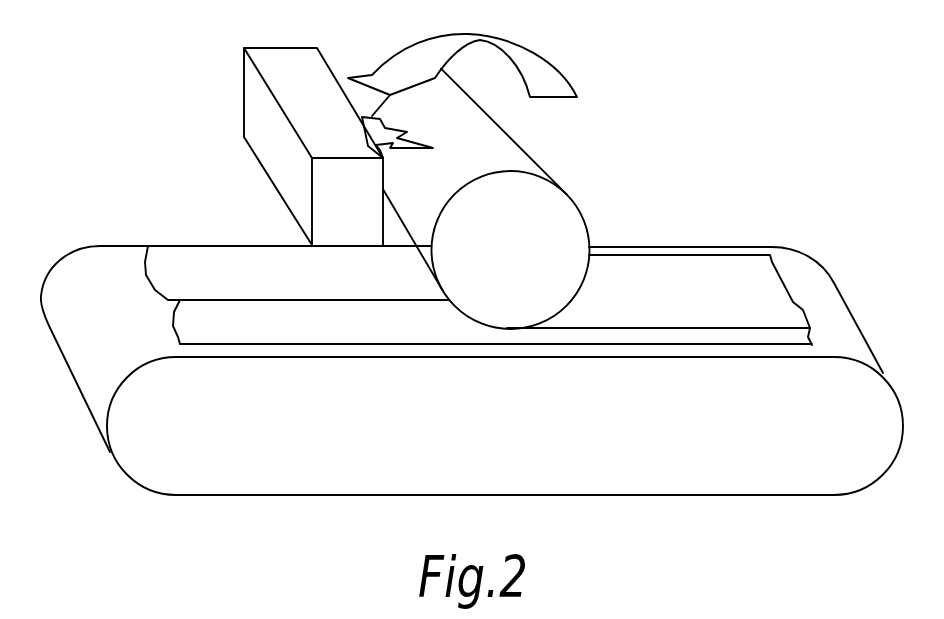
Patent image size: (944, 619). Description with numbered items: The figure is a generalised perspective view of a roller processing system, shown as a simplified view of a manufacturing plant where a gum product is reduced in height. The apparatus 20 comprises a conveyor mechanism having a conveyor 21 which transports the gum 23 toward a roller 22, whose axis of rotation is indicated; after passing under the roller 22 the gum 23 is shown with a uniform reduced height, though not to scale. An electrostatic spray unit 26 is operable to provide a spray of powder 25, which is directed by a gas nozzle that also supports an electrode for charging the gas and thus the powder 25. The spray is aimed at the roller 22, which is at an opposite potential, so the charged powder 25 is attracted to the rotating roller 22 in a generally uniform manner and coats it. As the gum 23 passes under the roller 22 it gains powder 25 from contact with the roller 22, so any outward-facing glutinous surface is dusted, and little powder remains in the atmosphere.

The apparatus 20 is at (110, 452).
The conveyor 21 is at (47, 288).
The roller 22 is at (558, 183).
The gum 23 is at (233, 246).
The powder 25 is at (392, 137).
The electrostatic spray unit 26 is at (250, 101).